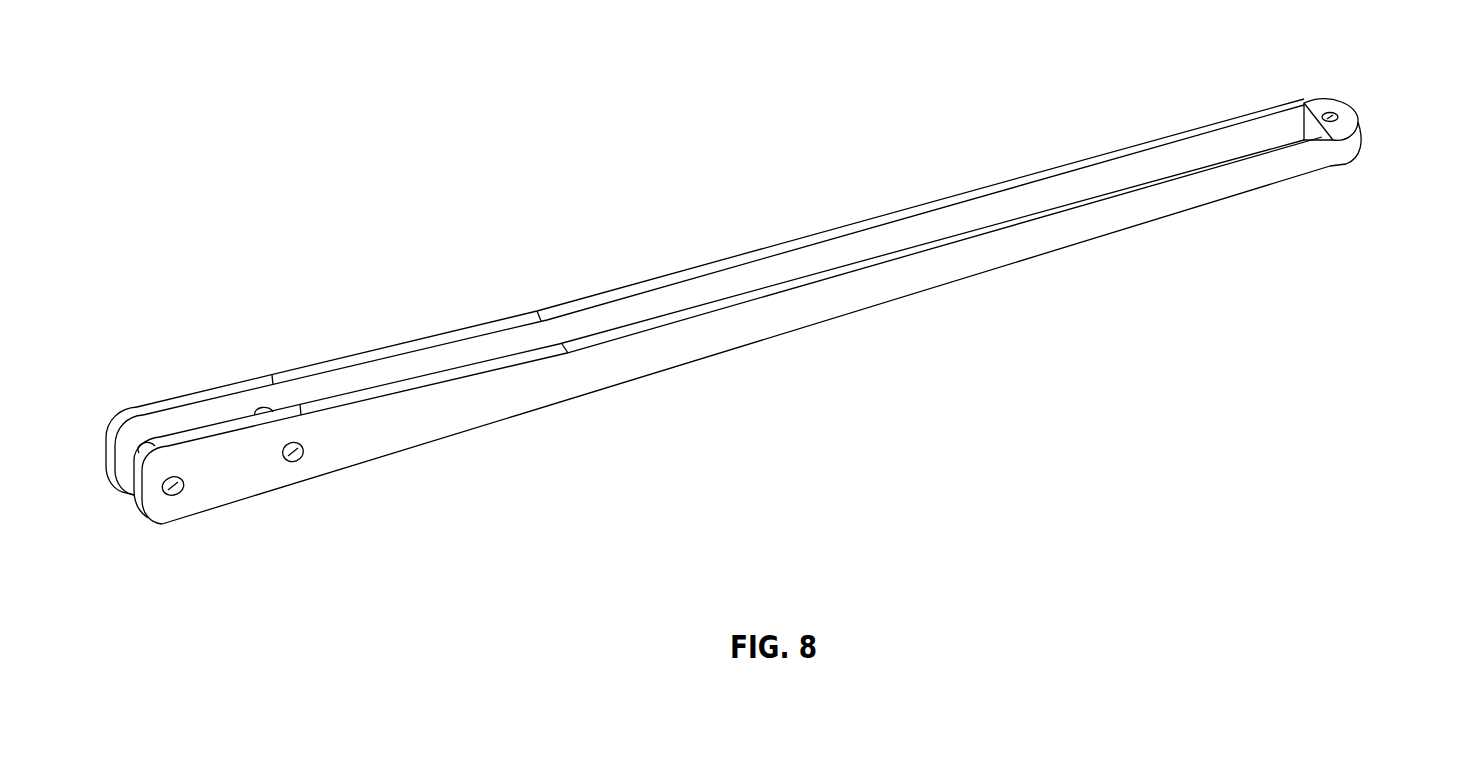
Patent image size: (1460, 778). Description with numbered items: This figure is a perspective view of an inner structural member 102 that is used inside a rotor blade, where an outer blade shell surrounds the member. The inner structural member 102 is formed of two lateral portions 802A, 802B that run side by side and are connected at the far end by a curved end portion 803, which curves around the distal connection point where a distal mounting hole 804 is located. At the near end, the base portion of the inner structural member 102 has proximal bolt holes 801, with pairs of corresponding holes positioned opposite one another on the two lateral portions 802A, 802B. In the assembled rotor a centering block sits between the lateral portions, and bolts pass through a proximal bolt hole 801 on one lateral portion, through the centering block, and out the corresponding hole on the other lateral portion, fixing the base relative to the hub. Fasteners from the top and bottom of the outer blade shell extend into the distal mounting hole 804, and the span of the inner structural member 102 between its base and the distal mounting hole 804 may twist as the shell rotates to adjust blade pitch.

The inner structural member 102 is at (690, 210).
The proximal bolt holes 801 is at (293, 457).
The lateral portion 802A is at (483, 398).
The lateral portion 802B is at (528, 338).
The curved end portion 803 is at (1345, 150).
The distal mounting hole 804 is at (1334, 112).